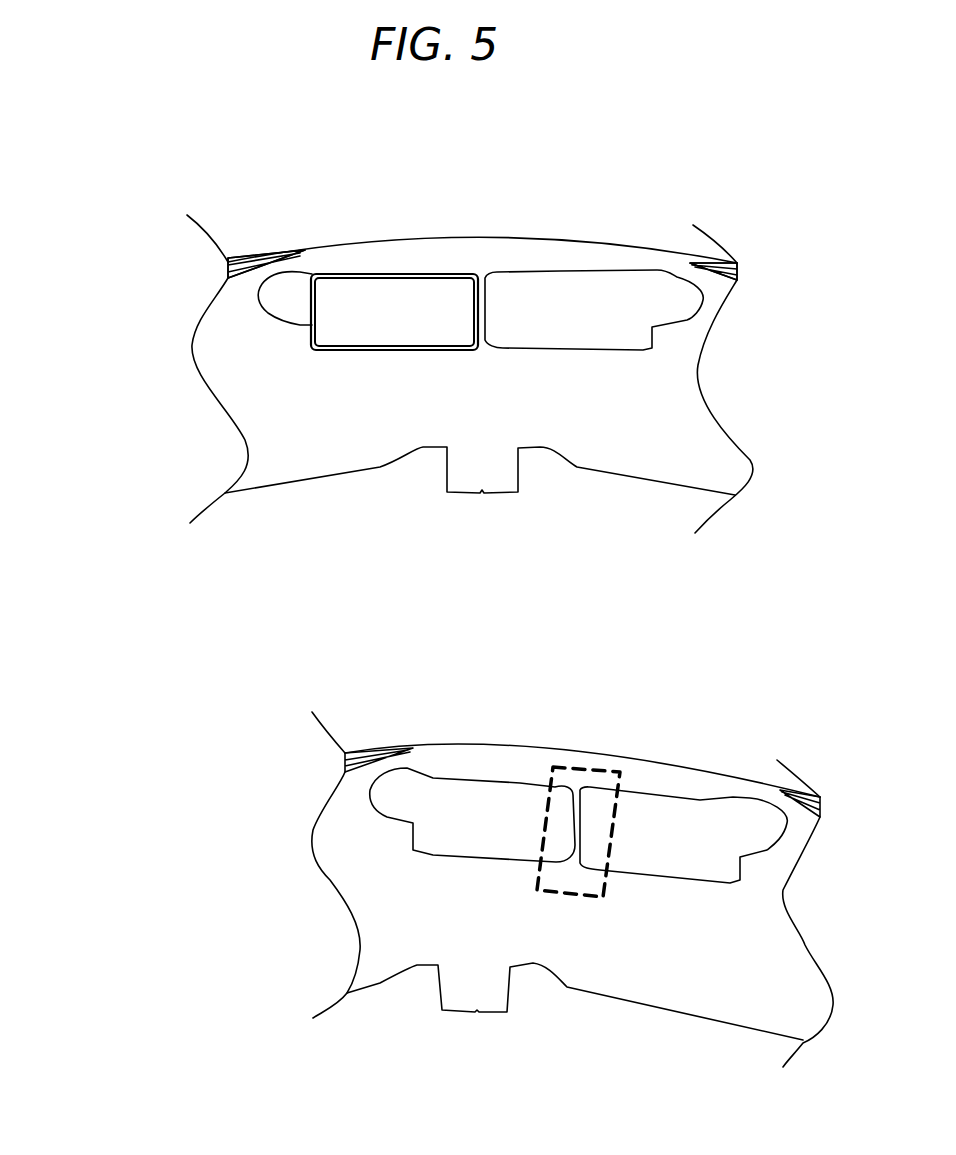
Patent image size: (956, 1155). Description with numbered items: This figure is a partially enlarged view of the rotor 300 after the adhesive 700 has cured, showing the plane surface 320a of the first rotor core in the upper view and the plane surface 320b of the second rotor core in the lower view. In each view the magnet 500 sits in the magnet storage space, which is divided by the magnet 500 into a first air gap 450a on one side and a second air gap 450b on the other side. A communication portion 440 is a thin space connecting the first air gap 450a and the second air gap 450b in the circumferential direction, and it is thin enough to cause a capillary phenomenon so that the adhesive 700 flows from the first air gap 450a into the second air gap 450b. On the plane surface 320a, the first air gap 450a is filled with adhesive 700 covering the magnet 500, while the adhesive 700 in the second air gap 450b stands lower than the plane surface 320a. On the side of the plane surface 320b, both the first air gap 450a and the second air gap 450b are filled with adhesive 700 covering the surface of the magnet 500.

The rotor 300 is at (78, 211).
The plane surface of the first rotor core 320a is at (470, 398).
The plane surface of the second rotor core 320b is at (572, 916).
The communication portion 440 is at (580, 780).
The first air gap 450a is at (693, 245).
The second air gap 450b is at (270, 268).
The magnet 500 is at (390, 302).
The adhesive 700 is at (290, 297).